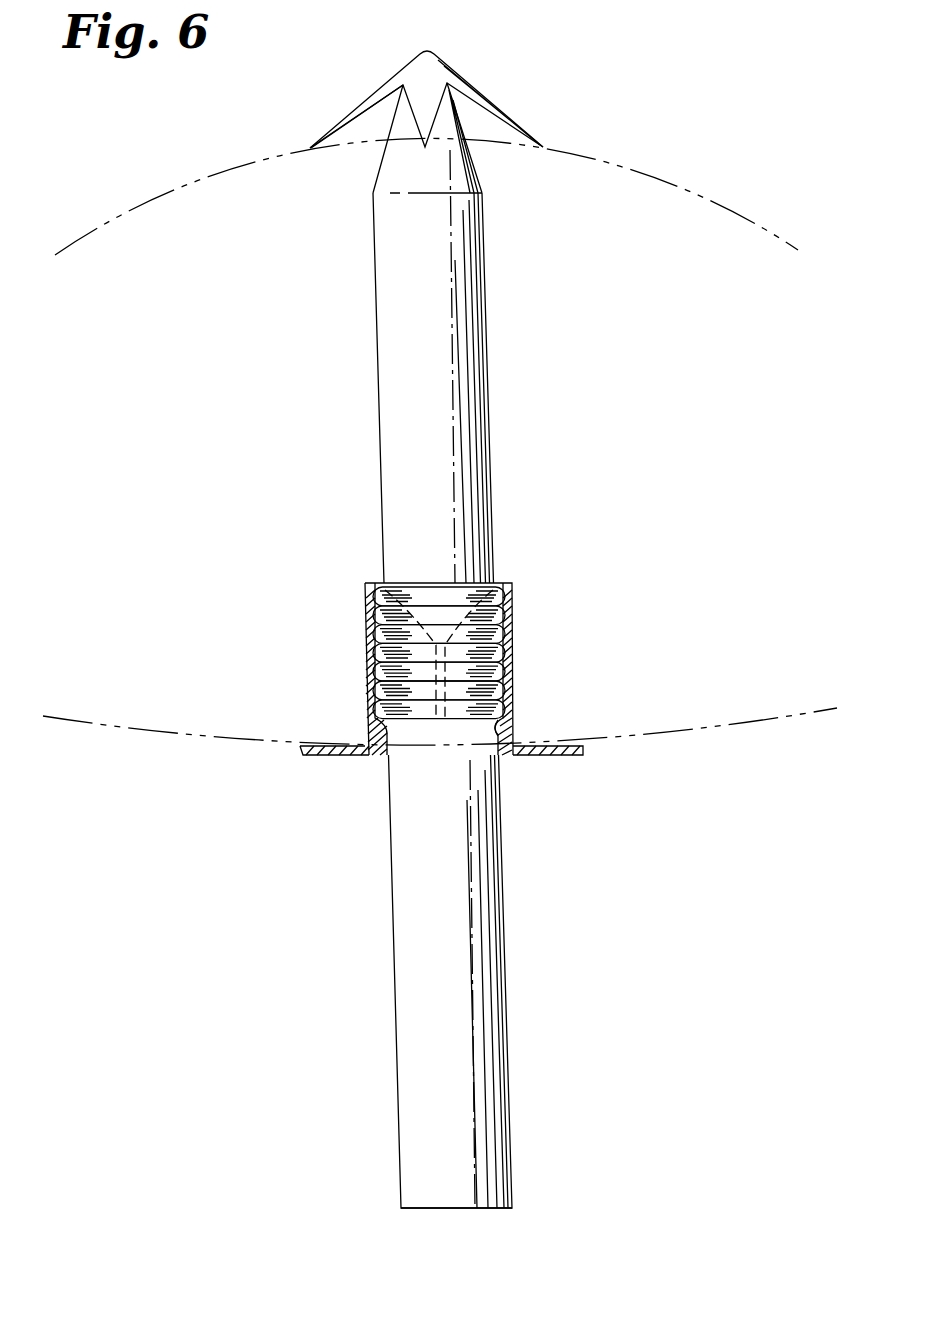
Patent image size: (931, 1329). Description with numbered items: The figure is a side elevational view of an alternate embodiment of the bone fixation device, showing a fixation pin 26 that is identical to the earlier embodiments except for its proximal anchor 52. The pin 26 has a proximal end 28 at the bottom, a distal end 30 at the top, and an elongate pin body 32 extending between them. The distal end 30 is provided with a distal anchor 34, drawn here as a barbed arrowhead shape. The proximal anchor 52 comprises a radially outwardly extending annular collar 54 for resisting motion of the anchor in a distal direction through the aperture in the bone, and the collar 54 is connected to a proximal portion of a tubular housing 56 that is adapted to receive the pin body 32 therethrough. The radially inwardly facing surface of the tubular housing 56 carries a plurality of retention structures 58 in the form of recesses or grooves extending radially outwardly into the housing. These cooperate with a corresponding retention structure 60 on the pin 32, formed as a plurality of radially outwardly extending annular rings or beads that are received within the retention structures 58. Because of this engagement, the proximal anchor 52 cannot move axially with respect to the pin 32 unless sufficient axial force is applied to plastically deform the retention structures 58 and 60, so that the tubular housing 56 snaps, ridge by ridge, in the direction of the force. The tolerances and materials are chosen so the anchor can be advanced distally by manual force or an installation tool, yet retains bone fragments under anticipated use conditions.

The elongate pin 26 is at (503, 348).
The proximal end 28 is at (514, 1193).
The distal end 30 is at (478, 58).
The pin body 32 is at (473, 412).
The distal anchor 34 is at (397, 70).
The proximal anchor 52 is at (337, 650).
The annular collar 54 is at (310, 757).
The tubular housing 56 is at (503, 602).
The retention structures 58 is at (503, 730).
The retention structure 60 is at (370, 708).